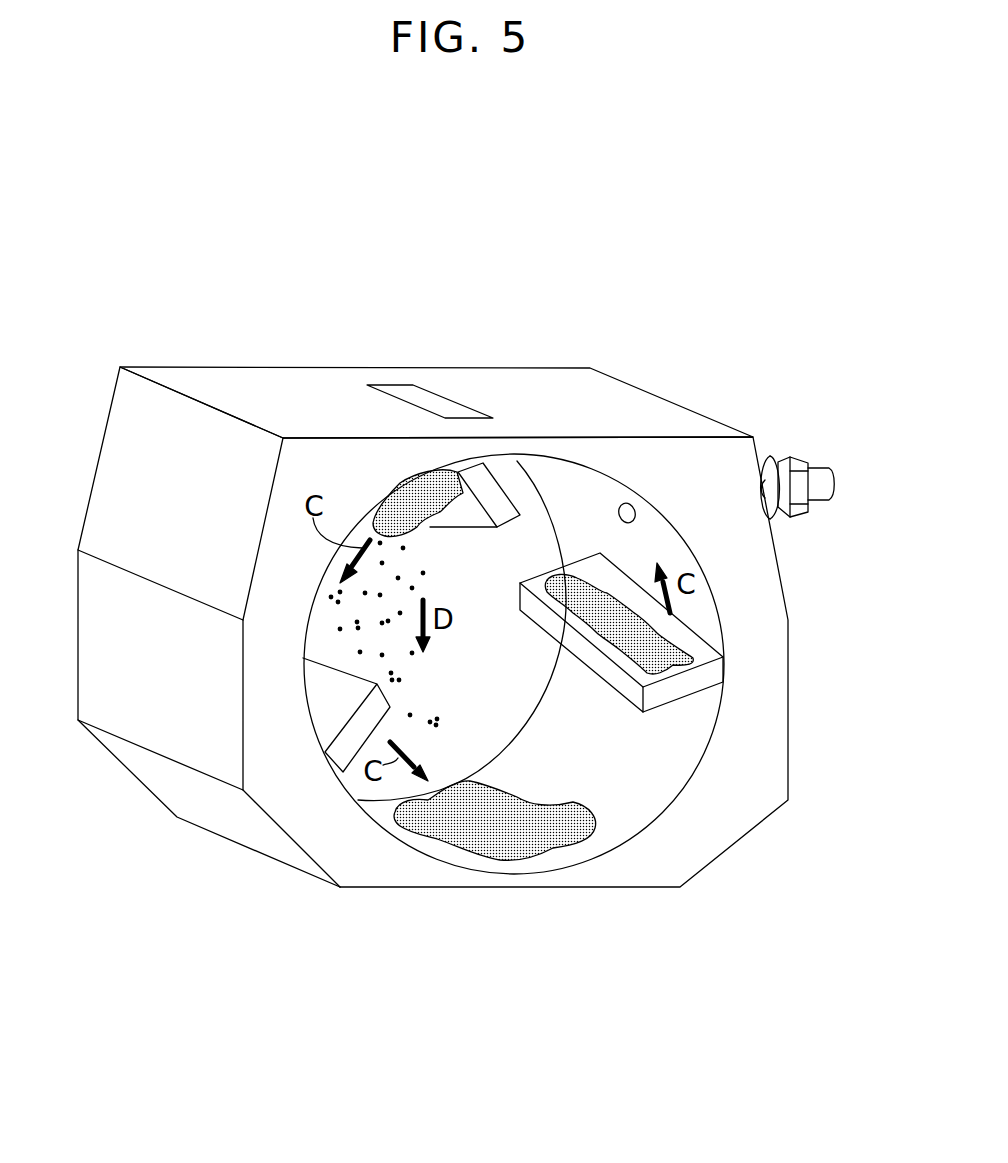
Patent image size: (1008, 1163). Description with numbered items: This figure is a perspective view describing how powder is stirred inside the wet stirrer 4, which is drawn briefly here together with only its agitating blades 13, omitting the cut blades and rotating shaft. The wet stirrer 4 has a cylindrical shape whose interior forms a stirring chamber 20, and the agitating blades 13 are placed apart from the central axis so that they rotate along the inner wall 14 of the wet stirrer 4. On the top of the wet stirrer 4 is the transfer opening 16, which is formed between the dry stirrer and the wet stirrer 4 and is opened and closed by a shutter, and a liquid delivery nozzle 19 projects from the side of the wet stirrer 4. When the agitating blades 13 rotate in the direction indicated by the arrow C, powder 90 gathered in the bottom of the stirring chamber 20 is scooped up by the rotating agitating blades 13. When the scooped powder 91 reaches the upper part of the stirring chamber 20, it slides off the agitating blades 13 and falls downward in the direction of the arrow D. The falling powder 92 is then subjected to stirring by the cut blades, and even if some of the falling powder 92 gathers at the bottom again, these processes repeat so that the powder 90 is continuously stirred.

The wet stirrer 4 is at (620, 280).
The agitating blades 13 is at (487, 498).
The inner wall 14 is at (645, 523).
The transfer opening 16 is at (442, 402).
The liquid delivery nozzle 19 is at (822, 462).
The stirring chamber 20 is at (474, 695).
The powder 90 is at (523, 843).
The scooped powder 91 is at (703, 642).
The falling powder 92 is at (340, 630).